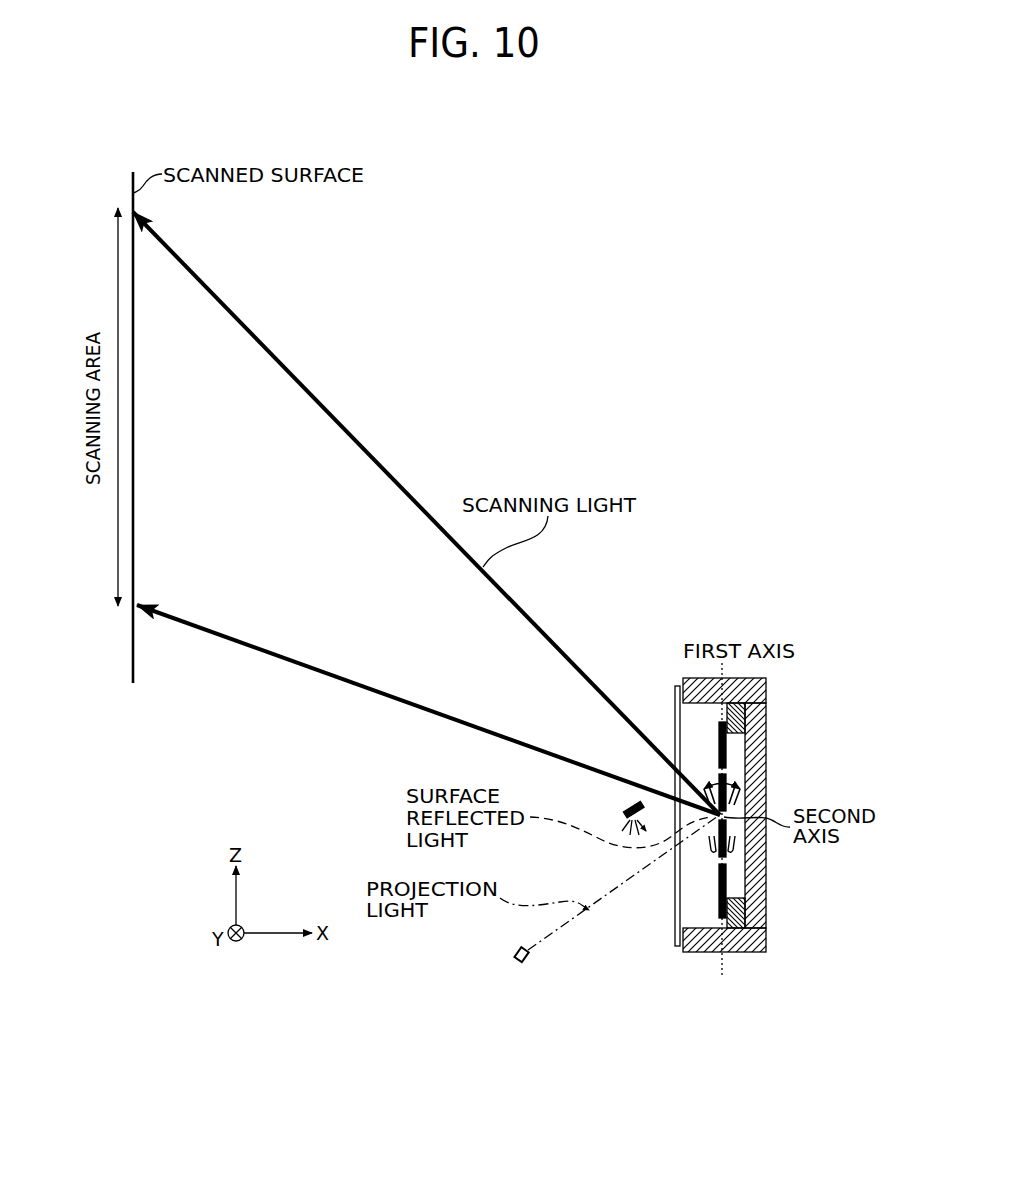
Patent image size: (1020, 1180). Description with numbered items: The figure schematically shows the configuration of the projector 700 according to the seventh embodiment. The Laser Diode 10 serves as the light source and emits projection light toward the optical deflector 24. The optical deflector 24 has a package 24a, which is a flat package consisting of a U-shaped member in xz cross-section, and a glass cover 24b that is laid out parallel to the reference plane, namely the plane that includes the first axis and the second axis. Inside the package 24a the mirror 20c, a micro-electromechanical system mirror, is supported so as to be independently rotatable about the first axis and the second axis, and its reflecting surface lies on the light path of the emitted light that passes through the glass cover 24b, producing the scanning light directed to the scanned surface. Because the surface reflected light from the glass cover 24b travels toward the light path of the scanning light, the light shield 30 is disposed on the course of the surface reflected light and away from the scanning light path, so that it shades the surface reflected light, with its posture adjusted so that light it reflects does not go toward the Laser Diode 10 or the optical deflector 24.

The projector 700 is at (613, 430).
The optical deflector 24 is at (725, 622).
The package 24a is at (682, 678).
The glass cover 24b is at (677, 933).
The mirror 20c is at (740, 830).
The light shield 30 is at (630, 808).
The Laser Diode (LD) 10 is at (518, 960).